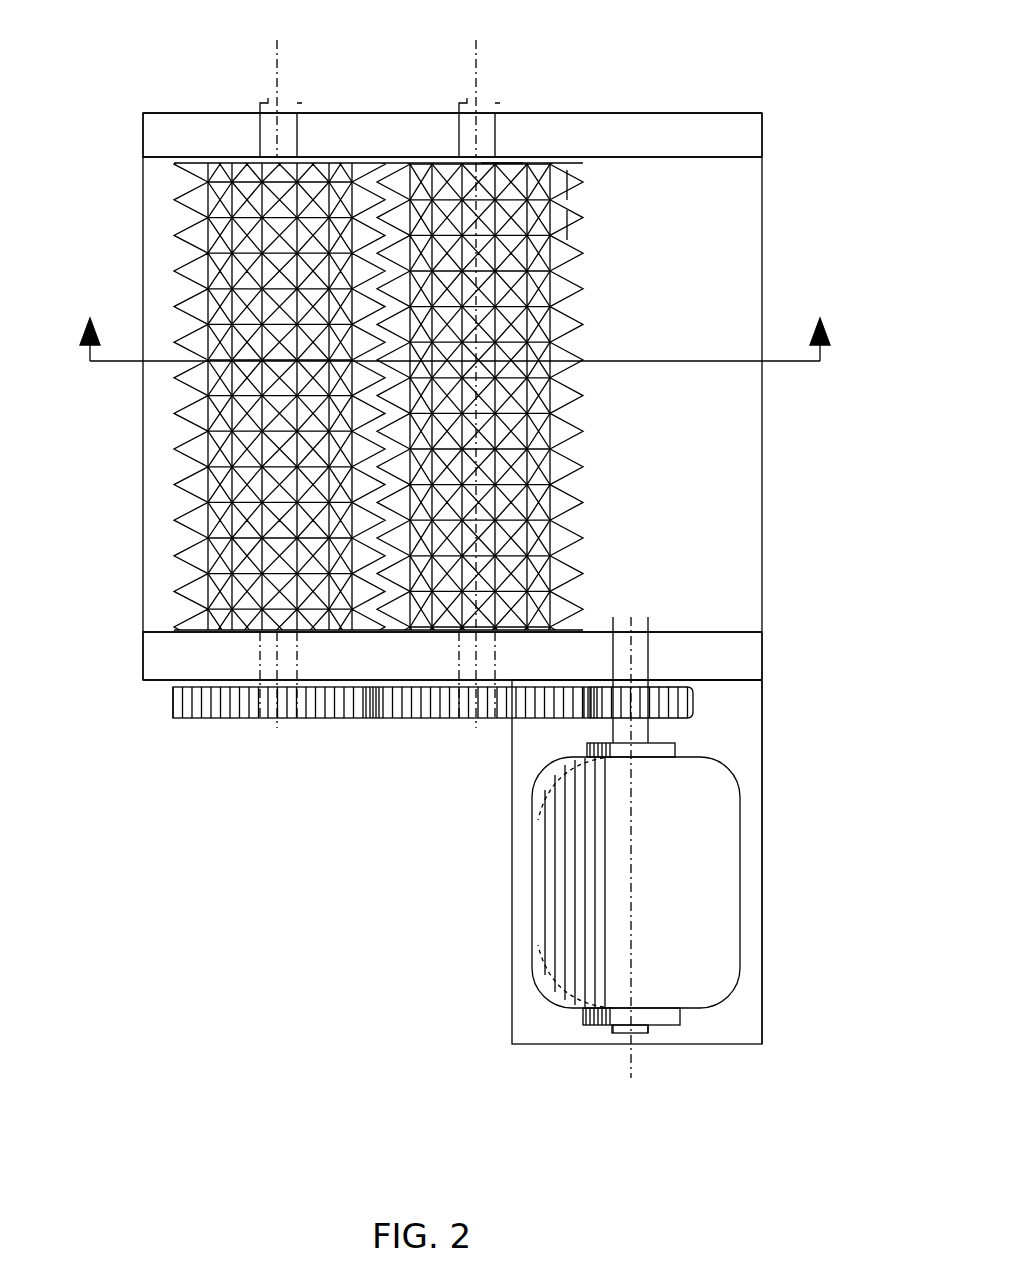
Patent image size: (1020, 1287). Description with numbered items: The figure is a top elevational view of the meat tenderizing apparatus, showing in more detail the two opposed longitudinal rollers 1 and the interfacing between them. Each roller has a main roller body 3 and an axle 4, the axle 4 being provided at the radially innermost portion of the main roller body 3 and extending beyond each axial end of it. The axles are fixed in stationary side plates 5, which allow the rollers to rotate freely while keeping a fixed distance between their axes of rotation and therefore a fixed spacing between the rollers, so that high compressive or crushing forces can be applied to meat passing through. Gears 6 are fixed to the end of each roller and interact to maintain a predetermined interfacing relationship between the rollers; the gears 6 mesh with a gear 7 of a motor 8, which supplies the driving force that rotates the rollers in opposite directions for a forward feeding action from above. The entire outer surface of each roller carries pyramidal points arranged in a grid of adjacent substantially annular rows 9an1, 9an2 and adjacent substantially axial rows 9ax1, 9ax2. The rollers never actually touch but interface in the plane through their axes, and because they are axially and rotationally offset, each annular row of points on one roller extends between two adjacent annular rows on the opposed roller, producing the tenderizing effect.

The rotatable rollers 1 is at (177, 295).
The main roller body 3 is at (207, 440).
The axle 4 is at (267, 100).
The side plates 5 is at (747, 135).
The gears 6 is at (237, 718).
The gear of motor 7 is at (695, 705).
The motor 8 is at (722, 885).
The axial row of pyramidal points 9ax1 is at (478, 160).
The axial row of pyramidal points 9ax2 is at (518, 160).
The annular row of pyramidal points 9an1 is at (567, 185).
The annular row of pyramidal points 9an2 is at (565, 224).